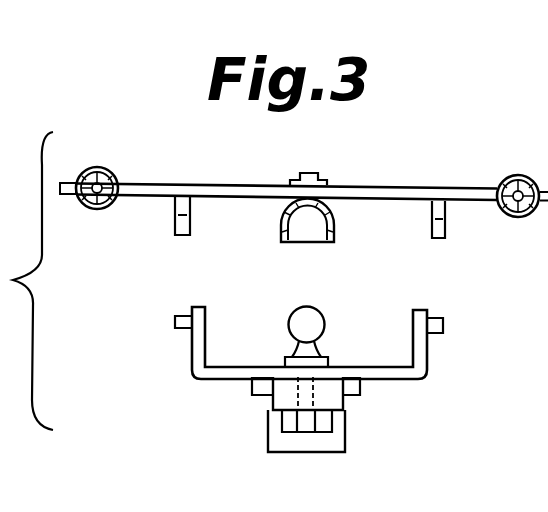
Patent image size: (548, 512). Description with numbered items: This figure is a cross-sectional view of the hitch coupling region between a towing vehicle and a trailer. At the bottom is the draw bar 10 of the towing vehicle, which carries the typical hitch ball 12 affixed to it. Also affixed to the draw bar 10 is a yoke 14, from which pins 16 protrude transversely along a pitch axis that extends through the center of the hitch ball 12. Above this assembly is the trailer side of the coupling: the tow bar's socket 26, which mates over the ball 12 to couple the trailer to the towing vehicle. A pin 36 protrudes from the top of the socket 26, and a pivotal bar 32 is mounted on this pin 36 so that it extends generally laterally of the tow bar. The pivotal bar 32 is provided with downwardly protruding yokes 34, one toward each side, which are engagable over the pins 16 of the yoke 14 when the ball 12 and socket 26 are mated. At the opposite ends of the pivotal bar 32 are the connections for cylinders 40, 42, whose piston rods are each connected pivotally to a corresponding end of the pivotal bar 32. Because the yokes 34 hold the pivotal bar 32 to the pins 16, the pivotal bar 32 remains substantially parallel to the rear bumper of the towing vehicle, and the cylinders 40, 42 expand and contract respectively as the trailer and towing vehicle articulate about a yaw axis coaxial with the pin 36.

The draw bar 10 is at (280, 397).
The hitch ball 12 is at (310, 313).
The yoke 14 is at (365, 378).
The pins 16 is at (175, 323).
The socket 26 is at (281, 220).
The pivotal bar 32 is at (438, 160).
The yokes 34 is at (175, 225).
The pin 36 is at (315, 172).
The cylinder 40 is at (533, 143).
The cylinder 42 is at (128, 130).